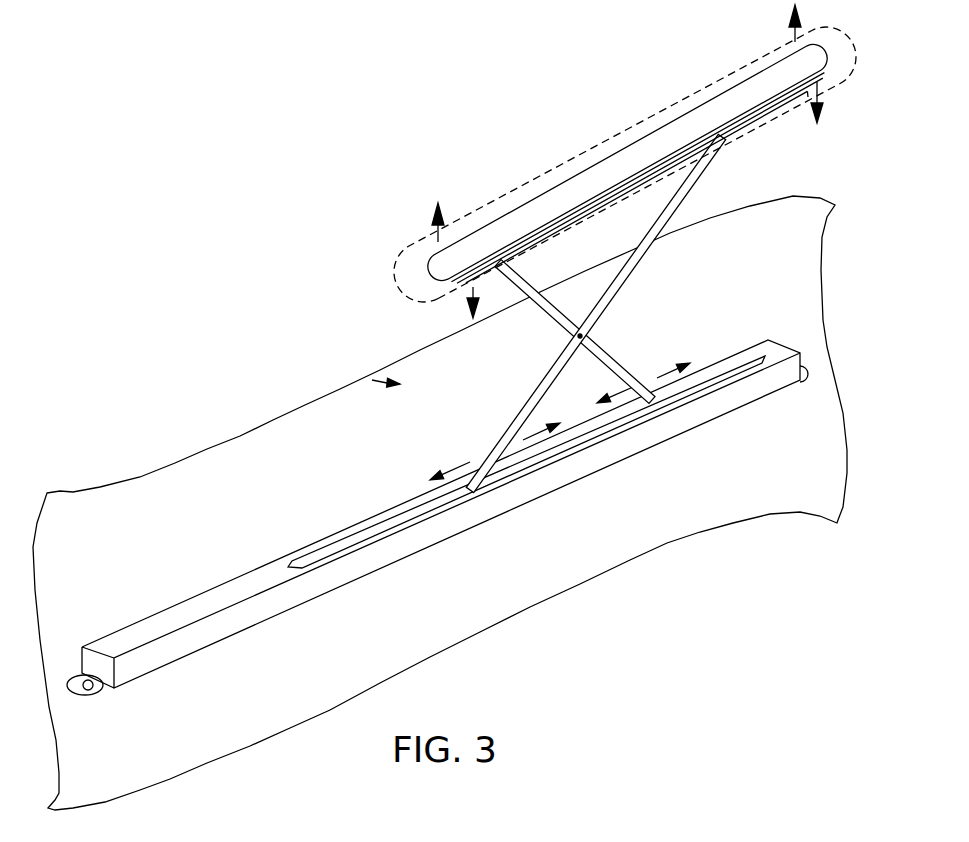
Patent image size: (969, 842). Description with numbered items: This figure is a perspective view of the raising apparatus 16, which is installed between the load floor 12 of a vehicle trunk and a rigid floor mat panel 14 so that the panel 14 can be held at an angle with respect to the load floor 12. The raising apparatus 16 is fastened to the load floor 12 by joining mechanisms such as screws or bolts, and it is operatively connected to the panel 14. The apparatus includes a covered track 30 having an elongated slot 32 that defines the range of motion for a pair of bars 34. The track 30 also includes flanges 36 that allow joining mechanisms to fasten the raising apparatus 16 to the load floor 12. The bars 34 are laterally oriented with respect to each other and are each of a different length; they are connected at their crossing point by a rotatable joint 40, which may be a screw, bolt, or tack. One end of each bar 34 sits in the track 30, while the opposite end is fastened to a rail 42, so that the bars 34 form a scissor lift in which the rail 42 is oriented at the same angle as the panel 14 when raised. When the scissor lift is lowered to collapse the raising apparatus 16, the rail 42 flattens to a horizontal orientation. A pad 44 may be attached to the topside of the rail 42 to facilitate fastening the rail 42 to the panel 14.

The load floor 12 is at (93, 510).
The rigid floor mat panel 14 is at (625, 161).
The raising apparatus 16 is at (372, 380).
The covered track 30 is at (152, 620).
The elongated slot 32 is at (297, 560).
The bars 34 is at (553, 317).
The flanges 36 is at (97, 697).
The rotatable joint 40 is at (580, 338).
The rail 42 is at (767, 117).
The pad 44 is at (553, 200).